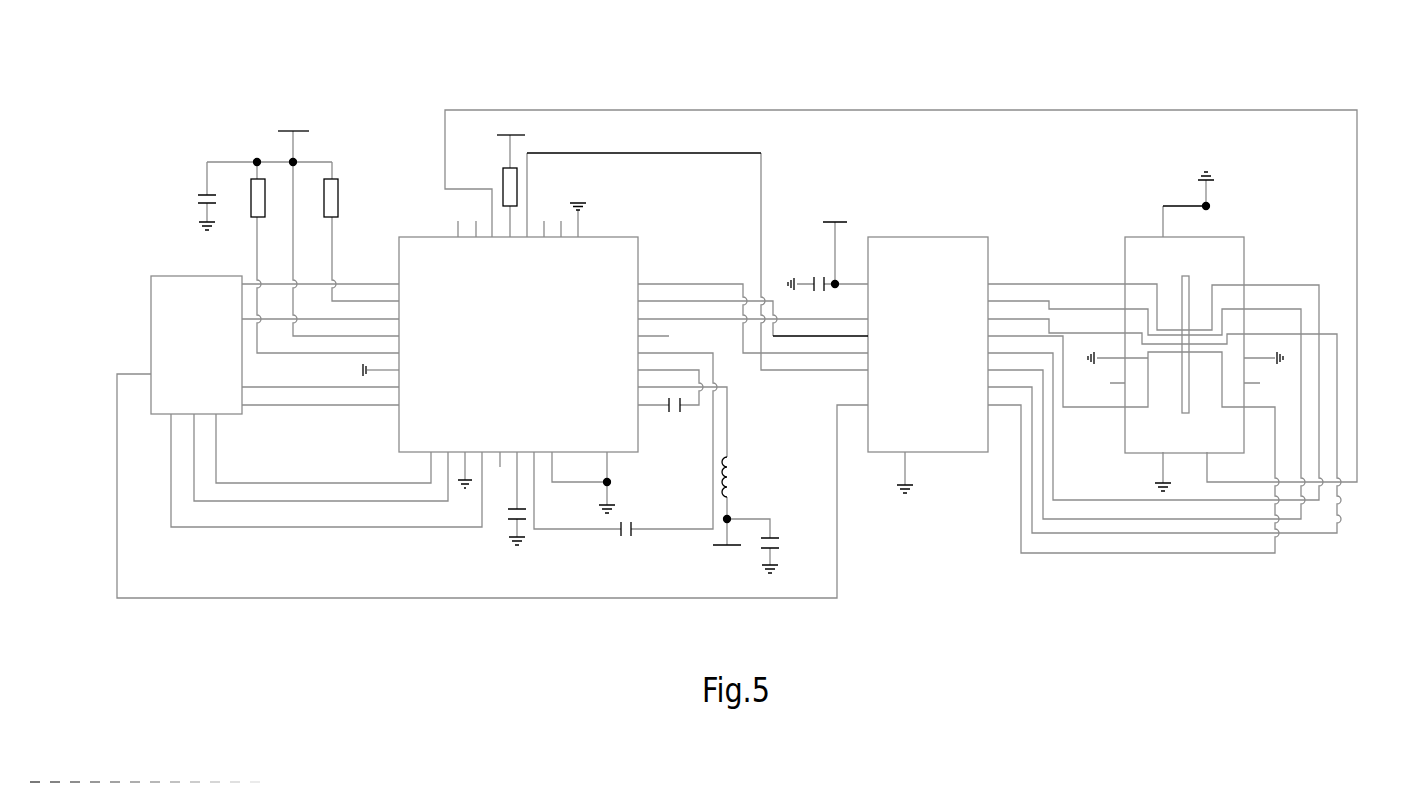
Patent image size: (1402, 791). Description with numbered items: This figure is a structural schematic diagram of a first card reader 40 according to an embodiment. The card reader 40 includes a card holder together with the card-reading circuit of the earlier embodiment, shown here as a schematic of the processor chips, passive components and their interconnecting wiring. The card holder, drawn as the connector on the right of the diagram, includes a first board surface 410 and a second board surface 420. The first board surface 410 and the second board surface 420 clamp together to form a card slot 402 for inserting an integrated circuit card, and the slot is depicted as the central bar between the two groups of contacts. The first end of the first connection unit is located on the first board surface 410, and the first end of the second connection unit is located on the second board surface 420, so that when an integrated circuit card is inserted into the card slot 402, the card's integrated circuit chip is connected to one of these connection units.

The card reader 40 is at (836, 62).
The first board surface 410 is at (1180, 290).
The second board surface 420 is at (1190, 290).
The card slot 402 is at (1183, 408).